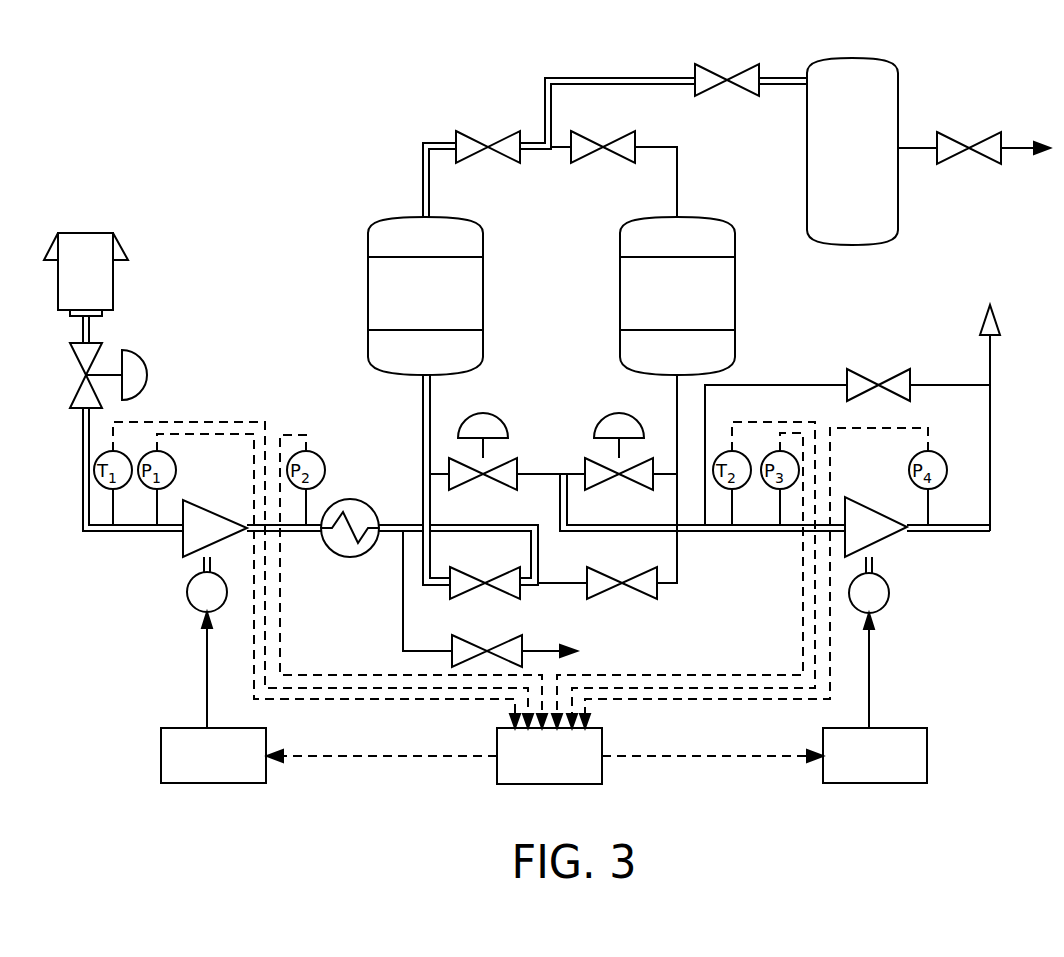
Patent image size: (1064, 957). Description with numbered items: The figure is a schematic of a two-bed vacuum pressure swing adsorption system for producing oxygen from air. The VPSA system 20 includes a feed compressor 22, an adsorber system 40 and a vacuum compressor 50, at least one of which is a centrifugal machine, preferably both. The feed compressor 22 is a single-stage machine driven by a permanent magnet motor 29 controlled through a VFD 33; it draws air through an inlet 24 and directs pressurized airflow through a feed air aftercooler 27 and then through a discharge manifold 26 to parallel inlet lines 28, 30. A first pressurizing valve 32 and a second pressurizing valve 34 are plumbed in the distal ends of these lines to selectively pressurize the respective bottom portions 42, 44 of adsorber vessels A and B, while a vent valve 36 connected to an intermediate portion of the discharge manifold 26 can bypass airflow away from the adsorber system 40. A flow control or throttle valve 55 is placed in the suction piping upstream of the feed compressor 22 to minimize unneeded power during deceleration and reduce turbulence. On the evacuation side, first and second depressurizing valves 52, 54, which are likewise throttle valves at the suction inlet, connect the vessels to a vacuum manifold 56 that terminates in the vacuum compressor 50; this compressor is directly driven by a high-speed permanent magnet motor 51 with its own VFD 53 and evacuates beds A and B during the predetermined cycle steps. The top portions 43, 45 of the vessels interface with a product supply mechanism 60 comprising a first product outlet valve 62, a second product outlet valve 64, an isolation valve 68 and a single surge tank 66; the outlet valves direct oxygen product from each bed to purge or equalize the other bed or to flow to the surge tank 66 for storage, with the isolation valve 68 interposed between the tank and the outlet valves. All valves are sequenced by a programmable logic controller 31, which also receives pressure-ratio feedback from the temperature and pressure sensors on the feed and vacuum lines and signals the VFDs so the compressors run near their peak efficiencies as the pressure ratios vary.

The VPSA system 20 is at (356, 134).
The feed compressor 22 is at (181, 545).
The inlet 24 is at (92, 253).
The discharge manifold 26 is at (392, 533).
The feed air aftercooler 27 is at (368, 498).
The inlet line 28 is at (528, 575).
The permanent magnet motor 29 is at (193, 609).
The inlet line 30 is at (558, 580).
The programmable logic controller 31 is at (600, 782).
The first pressurizing valve 32 is at (485, 592).
The VFD 33 is at (172, 727).
The second pressurizing valve 34 is at (618, 592).
The vent valve 36 is at (488, 633).
The adsorber system 40 is at (768, 288).
The bottom portion 42 is at (367, 347).
The top portion 43 is at (378, 222).
The bottom portion 44 is at (735, 350).
The top portion 45 is at (723, 220).
The vacuum compressor 50 is at (888, 538).
The permanent magnet motor 51 is at (885, 603).
The first depressurizing valve 52 is at (483, 412).
The VFD 53 is at (915, 727).
The second depressurizing valve 54 is at (615, 412).
The flow control valve 55 is at (144, 357).
The vacuum manifold 56 is at (755, 532).
The product supply mechanism 60 is at (912, 80).
The first product outlet valve 62 is at (485, 138).
The second product outlet valve 64 is at (602, 138).
The surge tank 66 is at (898, 200).
The isolation valve 68 is at (728, 83).